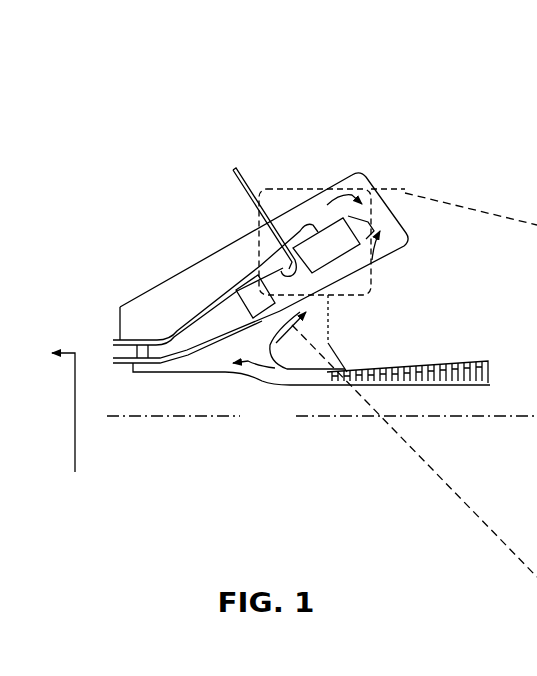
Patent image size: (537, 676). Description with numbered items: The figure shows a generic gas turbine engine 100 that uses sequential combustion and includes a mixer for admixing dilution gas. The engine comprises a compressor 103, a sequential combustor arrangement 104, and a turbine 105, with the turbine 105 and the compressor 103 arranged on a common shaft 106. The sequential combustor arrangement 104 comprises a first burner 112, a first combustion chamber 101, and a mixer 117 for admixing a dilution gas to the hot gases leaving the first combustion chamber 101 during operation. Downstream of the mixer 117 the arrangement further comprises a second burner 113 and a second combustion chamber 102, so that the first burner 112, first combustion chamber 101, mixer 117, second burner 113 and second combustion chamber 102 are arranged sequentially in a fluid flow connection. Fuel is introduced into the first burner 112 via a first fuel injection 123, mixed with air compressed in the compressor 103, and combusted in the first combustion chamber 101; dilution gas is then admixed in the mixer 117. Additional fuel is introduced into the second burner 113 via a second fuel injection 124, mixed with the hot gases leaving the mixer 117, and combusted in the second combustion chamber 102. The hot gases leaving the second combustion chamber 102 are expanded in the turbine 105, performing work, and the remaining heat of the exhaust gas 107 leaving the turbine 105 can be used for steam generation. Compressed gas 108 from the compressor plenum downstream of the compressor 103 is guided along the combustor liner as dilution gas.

The gas turbine engine 100 is at (203, 152).
The first combustion chamber 101 is at (338, 240).
The second combustion chamber 102 is at (215, 316).
The compressor 103 is at (443, 385).
The sequential combustor arrangement 104 is at (403, 215).
The turbine 105 is at (138, 388).
The shaft 106 is at (287, 431).
The exhaust gas 107 is at (73, 428).
The compressed gas 108 is at (305, 380).
The first burner 112 is at (372, 218).
The second burner 113 is at (277, 284).
The mixer 117 is at (314, 265).
The first fuel injection 123 is at (402, 192).
The second fuel injection 124 is at (243, 180).